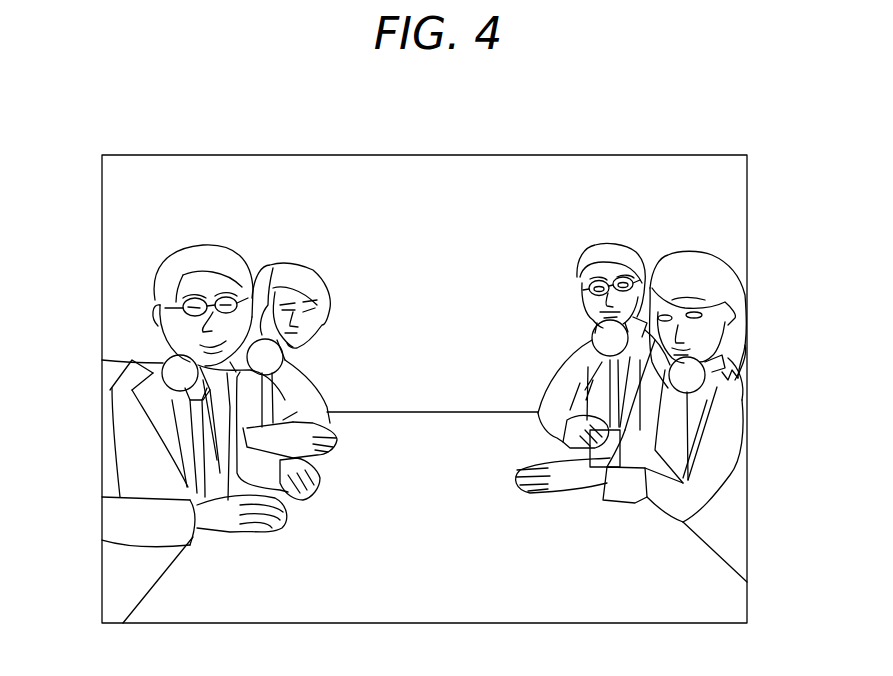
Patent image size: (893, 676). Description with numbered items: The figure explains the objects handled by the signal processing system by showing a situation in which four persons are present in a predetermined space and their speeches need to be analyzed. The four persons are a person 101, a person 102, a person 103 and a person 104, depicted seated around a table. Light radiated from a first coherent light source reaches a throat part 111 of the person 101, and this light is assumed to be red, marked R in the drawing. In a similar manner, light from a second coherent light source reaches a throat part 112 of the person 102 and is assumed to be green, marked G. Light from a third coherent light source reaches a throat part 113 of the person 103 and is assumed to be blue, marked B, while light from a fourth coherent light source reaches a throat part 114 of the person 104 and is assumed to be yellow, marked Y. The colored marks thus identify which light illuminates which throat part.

The person 101 is at (158, 275).
The person 102 is at (317, 273).
The person 103 is at (627, 243).
The person 104 is at (708, 253).
The throat part 111 is at (142, 362).
The throat part 112 is at (258, 340).
The throat part 113 is at (590, 328).
The throat part 114 is at (706, 380).